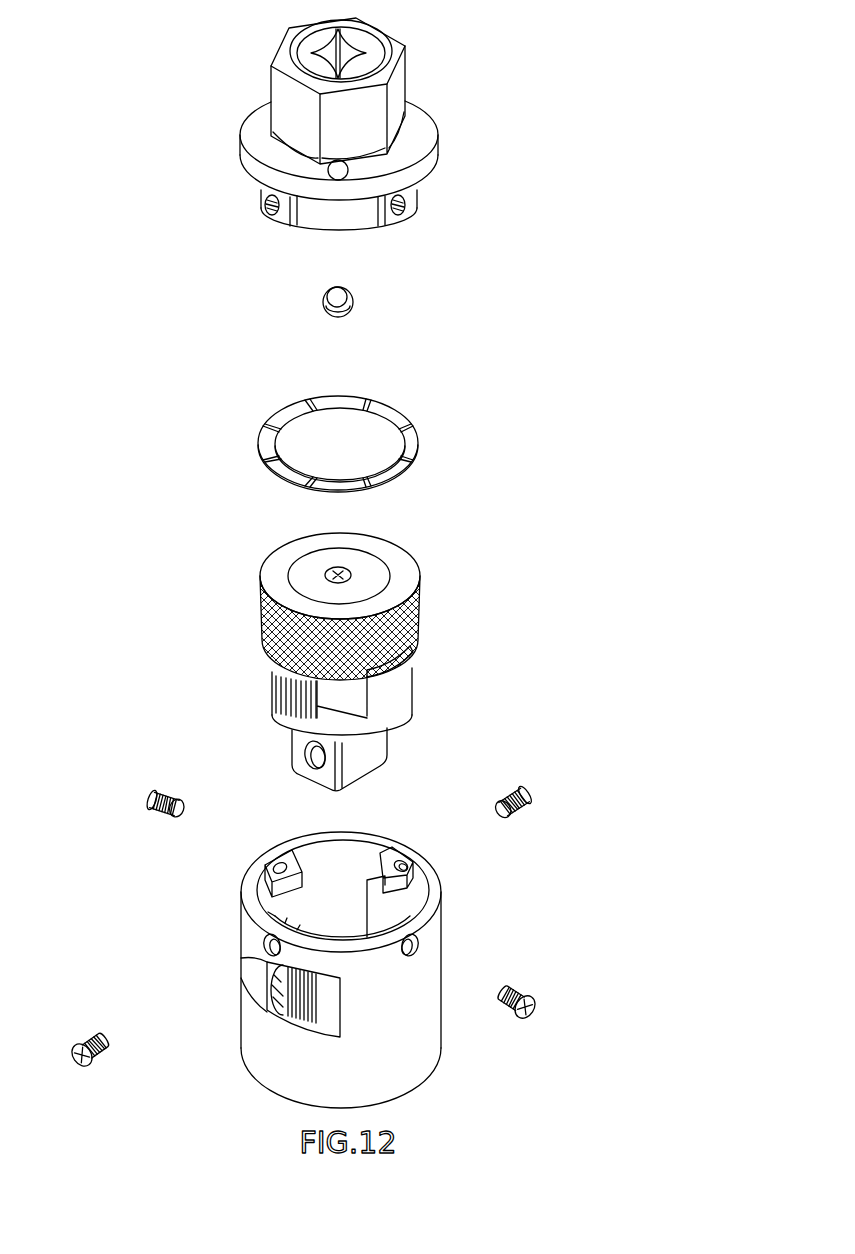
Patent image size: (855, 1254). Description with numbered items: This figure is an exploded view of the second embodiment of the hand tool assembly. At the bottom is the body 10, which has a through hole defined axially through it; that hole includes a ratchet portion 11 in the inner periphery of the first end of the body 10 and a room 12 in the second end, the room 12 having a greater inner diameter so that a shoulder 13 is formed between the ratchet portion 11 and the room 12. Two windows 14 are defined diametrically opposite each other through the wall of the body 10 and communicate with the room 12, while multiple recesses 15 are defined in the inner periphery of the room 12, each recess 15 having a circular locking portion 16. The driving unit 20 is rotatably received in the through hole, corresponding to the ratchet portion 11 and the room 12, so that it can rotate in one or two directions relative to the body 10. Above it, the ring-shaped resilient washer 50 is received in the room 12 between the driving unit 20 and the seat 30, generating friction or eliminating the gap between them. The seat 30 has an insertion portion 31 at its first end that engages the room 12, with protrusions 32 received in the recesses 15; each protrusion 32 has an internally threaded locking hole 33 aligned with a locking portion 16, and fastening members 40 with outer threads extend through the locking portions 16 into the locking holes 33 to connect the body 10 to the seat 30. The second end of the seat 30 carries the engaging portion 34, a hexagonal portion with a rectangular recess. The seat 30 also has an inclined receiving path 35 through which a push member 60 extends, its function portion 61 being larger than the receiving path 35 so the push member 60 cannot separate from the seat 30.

The body 10 is at (407, 1073).
The ratchet portion 11 is at (278, 1003).
The room 12 is at (320, 860).
The shoulder 13 is at (270, 972).
The windows 14 is at (422, 900).
The recesses 15 is at (393, 853).
The locking portion 16 is at (413, 867).
The driving unit 20 is at (390, 698).
The seat 30 is at (427, 115).
The insertion portion 31 is at (322, 222).
The protrusions 32 is at (395, 217).
The locking hole 33 is at (413, 210).
The engaging portion 34 is at (275, 65).
The receiving path 35 is at (330, 174).
The fastening members 40 is at (152, 798).
The resilient washer 50 is at (262, 458).
The push member 60 is at (327, 310).
The function portion 61 is at (350, 317).